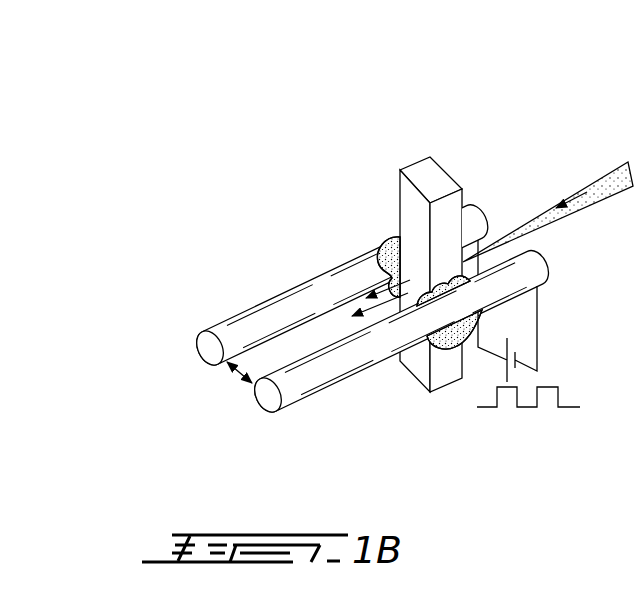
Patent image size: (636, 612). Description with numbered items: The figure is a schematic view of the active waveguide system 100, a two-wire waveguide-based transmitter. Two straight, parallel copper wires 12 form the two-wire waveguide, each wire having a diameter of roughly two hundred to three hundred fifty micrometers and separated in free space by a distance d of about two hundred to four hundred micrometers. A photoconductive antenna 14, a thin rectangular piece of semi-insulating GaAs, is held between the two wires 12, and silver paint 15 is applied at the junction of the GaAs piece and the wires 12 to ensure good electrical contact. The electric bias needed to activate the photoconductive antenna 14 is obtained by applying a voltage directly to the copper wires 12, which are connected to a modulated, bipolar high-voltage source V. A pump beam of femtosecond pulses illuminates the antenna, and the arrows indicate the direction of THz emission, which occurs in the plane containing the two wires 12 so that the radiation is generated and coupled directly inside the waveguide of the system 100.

The active waveguide system 100 is at (247, 187).
The wires 12 is at (227, 318).
The photoconductive antenna 14 is at (422, 172).
The silver paint 15 is at (453, 350).